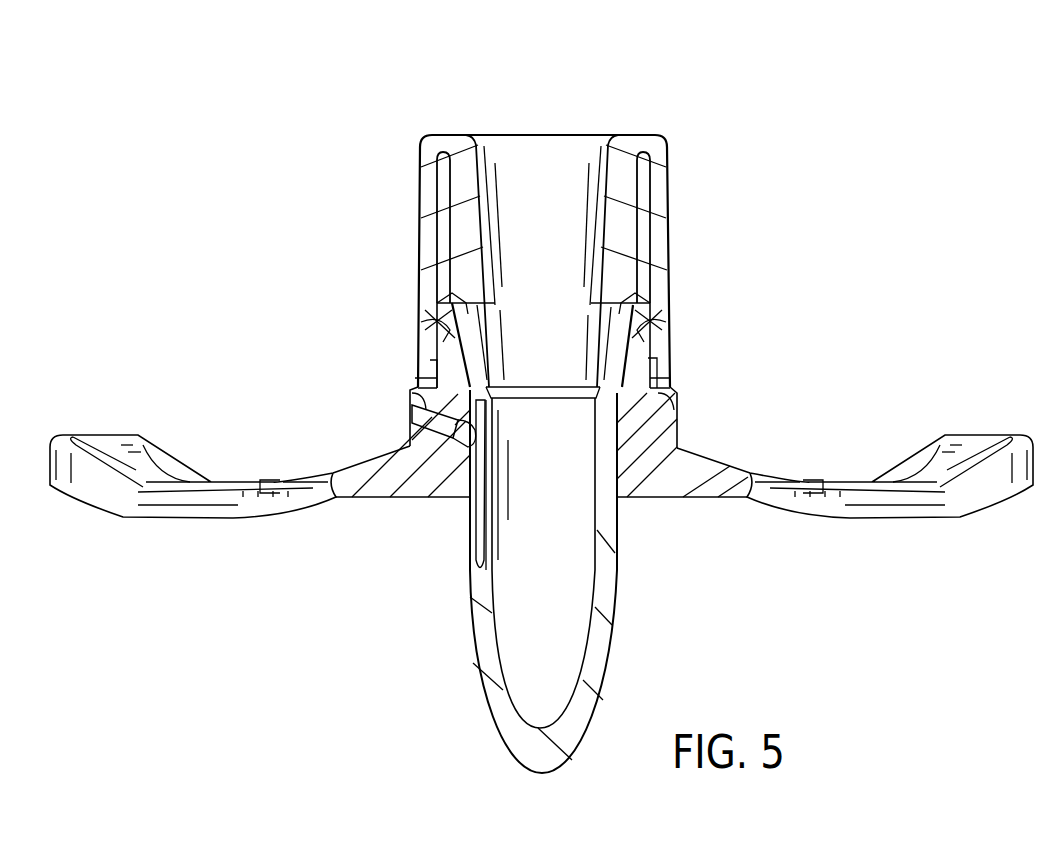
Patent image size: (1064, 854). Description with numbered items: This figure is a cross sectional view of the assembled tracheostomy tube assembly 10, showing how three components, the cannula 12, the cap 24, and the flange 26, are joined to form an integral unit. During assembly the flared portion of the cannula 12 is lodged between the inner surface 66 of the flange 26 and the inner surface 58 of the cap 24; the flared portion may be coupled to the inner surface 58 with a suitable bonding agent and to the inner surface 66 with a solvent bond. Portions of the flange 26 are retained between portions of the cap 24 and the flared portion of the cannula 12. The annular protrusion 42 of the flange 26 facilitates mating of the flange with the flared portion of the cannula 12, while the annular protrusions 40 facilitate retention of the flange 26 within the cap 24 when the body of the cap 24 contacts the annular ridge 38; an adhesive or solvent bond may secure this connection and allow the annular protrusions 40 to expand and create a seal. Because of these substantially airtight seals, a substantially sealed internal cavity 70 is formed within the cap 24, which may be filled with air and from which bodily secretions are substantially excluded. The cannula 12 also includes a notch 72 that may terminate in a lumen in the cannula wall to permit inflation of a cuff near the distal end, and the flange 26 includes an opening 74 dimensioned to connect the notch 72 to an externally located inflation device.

The tracheostomy tube assembly 10 is at (686, 74).
The cannula 12 is at (610, 510).
The cap 24 is at (562, 213).
The flange 26 is at (718, 470).
The annular ridge 38 is at (410, 413).
The annular protrusions 40 is at (428, 332).
The annular protrusion 42 is at (428, 300).
The inner surface of the cap 58 is at (430, 384).
The inner surface of the flange 66 is at (430, 322).
The internal cavity 70 is at (437, 172).
The notch 72 is at (447, 477).
The opening 74 is at (410, 444).